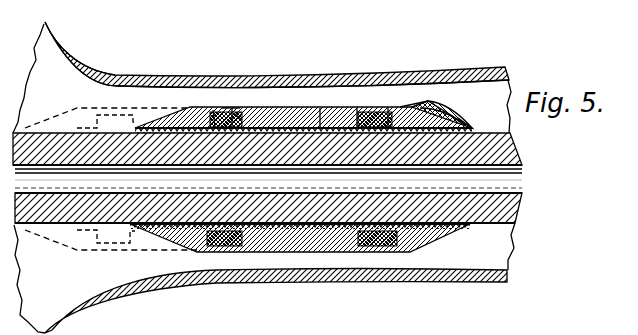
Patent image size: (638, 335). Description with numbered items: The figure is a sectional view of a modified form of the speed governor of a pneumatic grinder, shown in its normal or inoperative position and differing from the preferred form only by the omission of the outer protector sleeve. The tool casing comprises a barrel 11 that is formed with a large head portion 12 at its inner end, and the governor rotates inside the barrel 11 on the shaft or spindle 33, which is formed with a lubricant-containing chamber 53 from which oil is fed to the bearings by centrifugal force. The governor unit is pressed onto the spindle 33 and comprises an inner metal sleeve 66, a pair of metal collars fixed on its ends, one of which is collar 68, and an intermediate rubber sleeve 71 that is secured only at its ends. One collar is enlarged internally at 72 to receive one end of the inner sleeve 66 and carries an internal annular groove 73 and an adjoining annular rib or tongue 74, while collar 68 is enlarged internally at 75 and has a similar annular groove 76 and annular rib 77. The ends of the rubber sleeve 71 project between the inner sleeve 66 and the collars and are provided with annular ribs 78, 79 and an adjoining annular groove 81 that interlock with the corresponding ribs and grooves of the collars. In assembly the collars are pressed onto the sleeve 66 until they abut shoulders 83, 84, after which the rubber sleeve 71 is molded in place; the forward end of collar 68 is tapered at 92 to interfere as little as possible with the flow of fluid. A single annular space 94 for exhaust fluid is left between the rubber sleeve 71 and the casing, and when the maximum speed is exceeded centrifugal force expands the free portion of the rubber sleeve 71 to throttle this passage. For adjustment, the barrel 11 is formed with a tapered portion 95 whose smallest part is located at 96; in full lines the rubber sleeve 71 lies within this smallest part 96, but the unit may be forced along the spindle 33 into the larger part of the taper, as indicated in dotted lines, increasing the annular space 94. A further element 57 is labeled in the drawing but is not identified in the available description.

The barrel 11 is at (459, 72).
The large head portion 12 is at (67, 45).
The shaft 33 is at (516, 143).
The lubricant-containing chamber 53 is at (504, 180).
The hidden lower rib 57 is at (170, 242).
The inner metal sleeve 66 is at (320, 108).
The collar 68 is at (465, 120).
The rubber sleeve 71 is at (317, 113).
The internal enlargement 72 is at (217, 116).
The annular groove 73 is at (221, 108).
The annular rib 74 is at (236, 115).
The internal enlargement 75 is at (433, 115).
The annular groove 76 is at (401, 108).
The annular rib 77 is at (371, 110).
The annular rib 78 is at (215, 110).
The annular rib 79 is at (388, 108).
The annular groove 81 is at (232, 108).
The shoulder 83 is at (112, 119).
The shoulder 84 is at (440, 114).
The tapered forward end 92 is at (443, 228).
The annular space 94 is at (322, 258).
The tapered portion 95 is at (138, 87).
The smallest part 96 is at (280, 88).